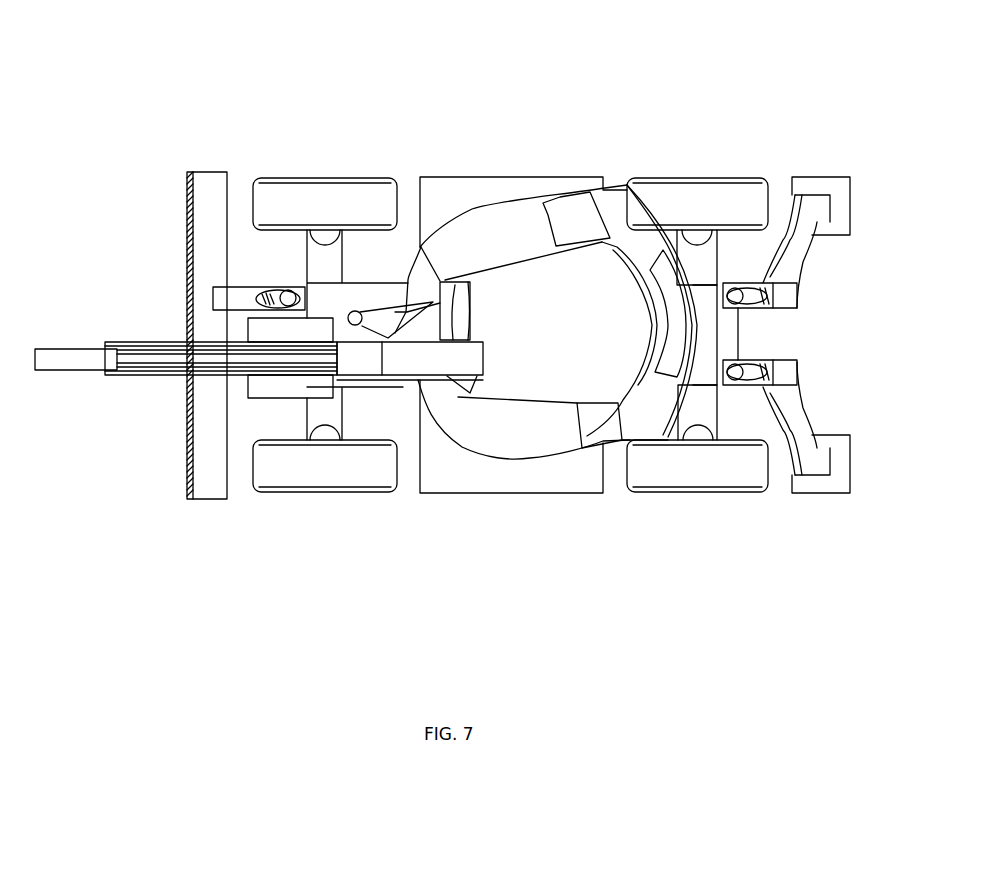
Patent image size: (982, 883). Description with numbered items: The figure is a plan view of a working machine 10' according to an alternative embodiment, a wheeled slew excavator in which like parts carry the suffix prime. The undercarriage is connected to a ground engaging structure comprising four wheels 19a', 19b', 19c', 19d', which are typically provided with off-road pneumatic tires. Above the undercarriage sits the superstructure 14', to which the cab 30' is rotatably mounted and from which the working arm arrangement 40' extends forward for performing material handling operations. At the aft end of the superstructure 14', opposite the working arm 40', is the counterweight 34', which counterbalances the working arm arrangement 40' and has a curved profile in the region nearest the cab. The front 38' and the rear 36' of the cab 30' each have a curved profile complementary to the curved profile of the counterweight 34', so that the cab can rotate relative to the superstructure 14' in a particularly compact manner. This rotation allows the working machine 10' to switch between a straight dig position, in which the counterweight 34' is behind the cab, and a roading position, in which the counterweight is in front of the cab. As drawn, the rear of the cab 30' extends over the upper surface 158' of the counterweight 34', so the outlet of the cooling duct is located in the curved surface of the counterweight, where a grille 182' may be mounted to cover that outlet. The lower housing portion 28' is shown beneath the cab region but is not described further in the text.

The working machine 10' is at (518, 263).
The superstructure 14' is at (523, 233).
The wheel 19a' is at (313, 504).
The wheel 19b' is at (325, 159).
The wheel 19c' is at (740, 176).
The wheel 19d' is at (697, 504).
The lower housing 28' is at (521, 458).
The cab 30' is at (546, 343).
The counterweight 34' is at (637, 316).
The rear of the cab 36' is at (629, 235).
The front of the cab 38' is at (425, 223).
The working arm arrangement 40' is at (186, 404).
The upper surface of the counterweight 158' is at (576, 157).
The grille 182' is at (677, 242).